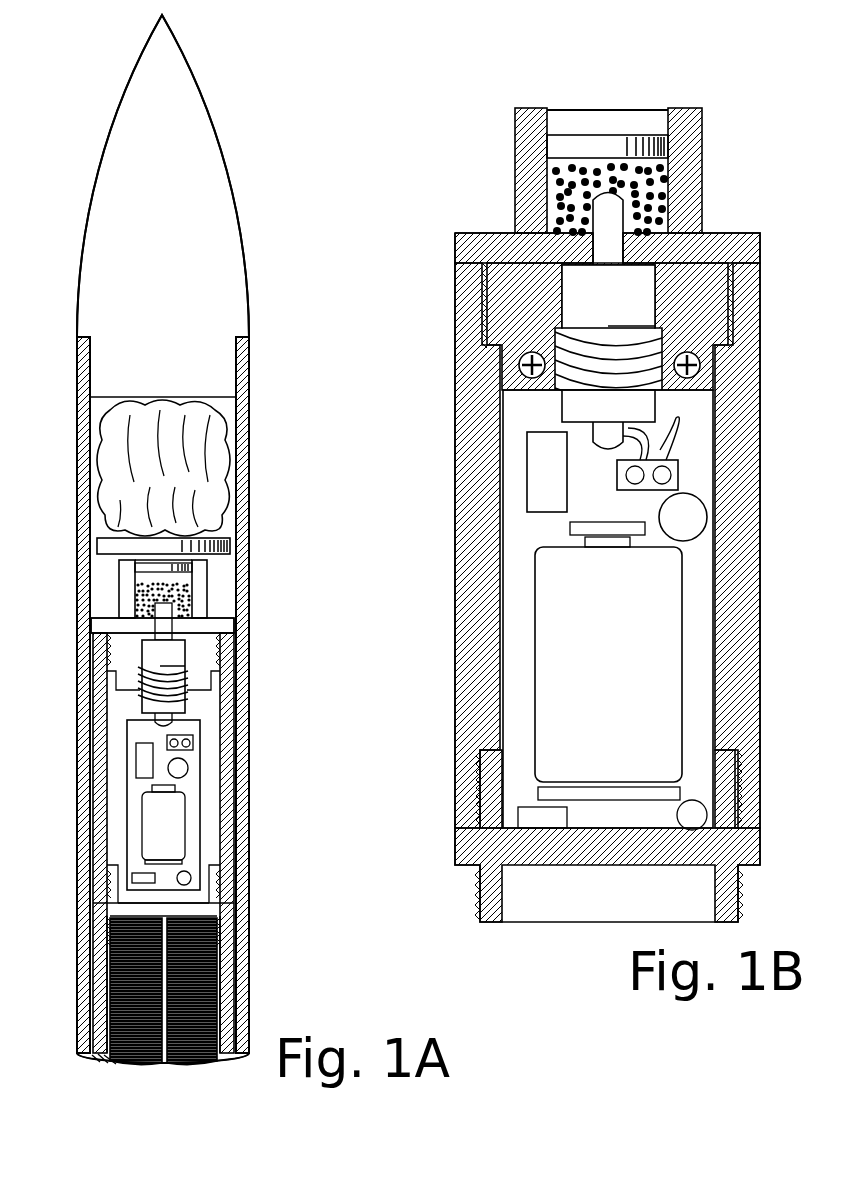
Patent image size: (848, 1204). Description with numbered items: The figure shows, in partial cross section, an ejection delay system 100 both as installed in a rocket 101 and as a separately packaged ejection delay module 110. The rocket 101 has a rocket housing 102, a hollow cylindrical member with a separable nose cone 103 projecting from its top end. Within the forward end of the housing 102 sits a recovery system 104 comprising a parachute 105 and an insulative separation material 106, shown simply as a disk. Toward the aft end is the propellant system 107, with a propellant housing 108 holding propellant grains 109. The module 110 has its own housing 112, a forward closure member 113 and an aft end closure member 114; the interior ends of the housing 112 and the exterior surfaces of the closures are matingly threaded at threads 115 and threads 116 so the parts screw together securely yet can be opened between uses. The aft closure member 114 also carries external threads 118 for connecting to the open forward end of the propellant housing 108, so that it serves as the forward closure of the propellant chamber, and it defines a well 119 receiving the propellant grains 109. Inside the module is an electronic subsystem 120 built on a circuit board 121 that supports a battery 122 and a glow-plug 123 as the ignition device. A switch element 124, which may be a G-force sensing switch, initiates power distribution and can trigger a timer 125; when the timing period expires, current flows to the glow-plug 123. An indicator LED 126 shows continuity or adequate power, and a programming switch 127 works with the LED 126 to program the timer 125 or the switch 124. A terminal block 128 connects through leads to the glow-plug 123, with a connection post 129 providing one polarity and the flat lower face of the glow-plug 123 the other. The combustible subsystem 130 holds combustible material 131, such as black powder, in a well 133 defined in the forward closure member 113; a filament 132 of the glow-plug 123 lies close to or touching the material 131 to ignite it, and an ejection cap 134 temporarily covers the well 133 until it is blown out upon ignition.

In FIG. 1A, the ejection delay system 100 is at (220, 597).
In FIG. 1B, the ejection delay system 100 is at (430, 117).
In FIG. 1A, the rocket 101 is at (86, 77).
In FIG. 1A, the rocket housing 102 is at (80, 373).
In FIG. 1A, the nose cone 103 is at (98, 222).
In FIG. 1A, the recovery system 104 is at (222, 412).
In FIG. 1A, the parachute 105 is at (127, 447).
In FIG. 1A, the insulative separation material 106 is at (113, 547).
In FIG. 1A, the propellant system 107 is at (117, 1072).
In FIG. 1A, the propellant housing 108 is at (92, 952).
In FIG. 1A, the propellant grain 109 is at (130, 1013).
In FIG. 1A, the ejection delay module 110 is at (195, 843).
In FIG. 1B, the ejection delay module 110 is at (442, 253).
In FIG. 1A, the housing 112 is at (240, 780).
In FIG. 1B, the housing 112 is at (455, 313).
In FIG. 1A, the forward closure member 113 is at (222, 658).
In FIG. 1B, the forward closure member 113 is at (502, 240).
In FIG. 1A, the aft end closure member 114 is at (222, 912).
In FIG. 1B, the aft end closure member 114 is at (455, 847).
In FIG. 1B, the threads 115 is at (760, 300).
In FIG. 1B, the threads 116 is at (737, 810).
In FIG. 1B, the external threads 118 is at (480, 900).
In FIG. 1B, the well 119 is at (547, 907).
In FIG. 1A, the electronic subsystem 120 is at (205, 713).
In FIG. 1B, the electronic subsystem 120 is at (517, 405).
In FIG. 1B, the circuit board 121 is at (518, 543).
In FIG. 1A, the battery 122 is at (163, 824).
In FIG. 1B, the battery 122 is at (602, 639).
In FIG. 1A, the glow-plug 123 is at (163, 683).
In FIG. 1B, the glow-plug 123 is at (601, 310).
In FIG. 1A, the switch element 124 is at (144, 760).
In FIG. 1B, the switch element 124 is at (540, 480).
In FIG. 1A, the timer 125 is at (178, 768).
In FIG. 1B, the timer 125 is at (687, 515).
In FIG. 1A, the indicator LED 126 is at (184, 878).
In FIG. 1B, the indicator LED 126 is at (693, 808).
In FIG. 1A, the programming switch 127 is at (143, 878).
In FIG. 1B, the programming switch 127 is at (545, 822).
In FIG. 1A, the terminal block 128 is at (180, 742).
In FIG. 1B, the terminal block 128 is at (673, 468).
In FIG. 1B, the connection post 129 is at (600, 440).
In FIG. 1A, the combustible subsystem 130 is at (120, 588).
In FIG. 1B, the combustible subsystem 130 is at (540, 177).
In FIG. 1A, the combustible material 131 is at (162, 599).
In FIG. 1B, the combustible material 131 is at (673, 190).
In FIG. 1A, the filament 132 is at (163, 621).
In FIG. 1B, the filament 132 is at (607, 240).
In FIG. 1B, the well 133 is at (680, 240).
In FIG. 1A, the ejection cap 134 is at (163, 567).
In FIG. 1B, the ejection cap 134 is at (610, 143).